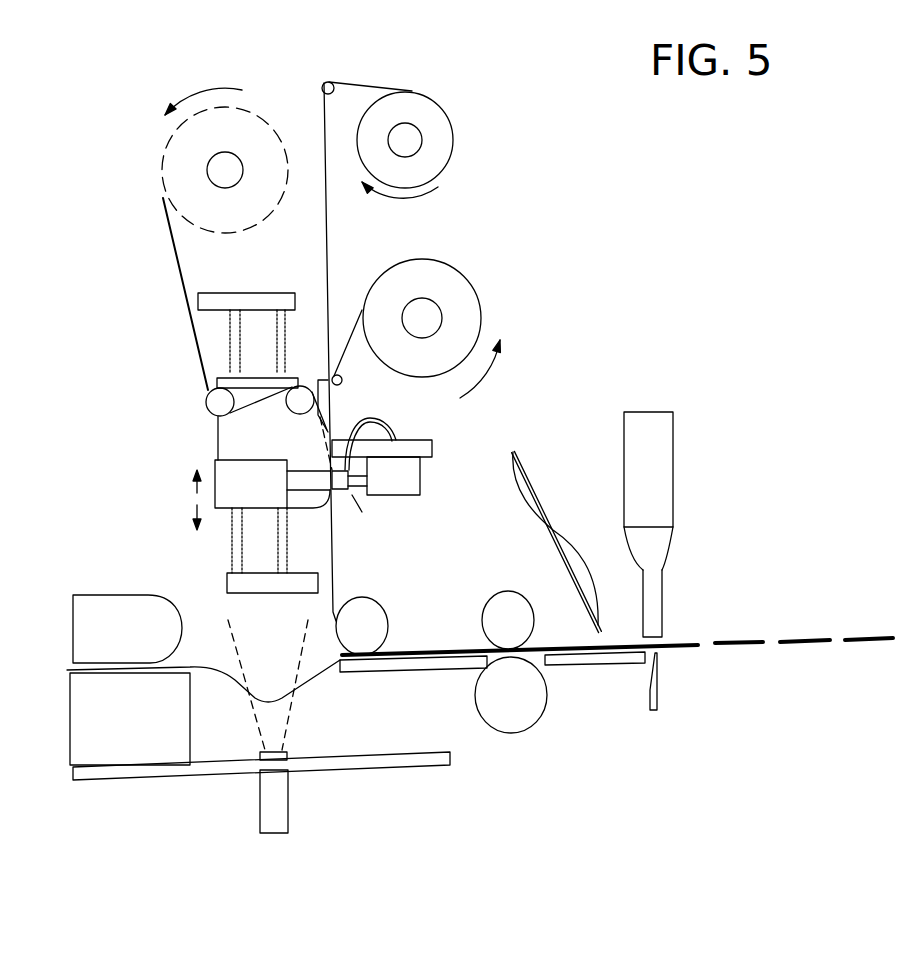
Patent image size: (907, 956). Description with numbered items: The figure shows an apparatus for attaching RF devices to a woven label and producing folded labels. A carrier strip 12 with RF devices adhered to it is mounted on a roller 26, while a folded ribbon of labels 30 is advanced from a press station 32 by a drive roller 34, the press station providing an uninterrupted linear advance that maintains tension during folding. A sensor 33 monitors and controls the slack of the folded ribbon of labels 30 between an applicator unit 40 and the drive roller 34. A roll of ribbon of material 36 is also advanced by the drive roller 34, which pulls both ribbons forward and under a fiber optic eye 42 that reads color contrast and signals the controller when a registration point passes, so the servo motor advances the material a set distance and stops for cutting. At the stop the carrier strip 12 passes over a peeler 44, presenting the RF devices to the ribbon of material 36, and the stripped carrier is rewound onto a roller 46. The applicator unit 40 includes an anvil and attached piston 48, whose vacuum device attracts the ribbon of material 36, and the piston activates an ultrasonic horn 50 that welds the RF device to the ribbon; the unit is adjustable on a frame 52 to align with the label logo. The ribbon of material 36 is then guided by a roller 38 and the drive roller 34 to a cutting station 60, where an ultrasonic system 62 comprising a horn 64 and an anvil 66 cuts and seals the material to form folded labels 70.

The carrier strip 12 is at (257, 112).
The roller 26 is at (182, 183).
The folded ribbon of labels 30 is at (312, 685).
The press station 32 is at (118, 595).
The sensor 33 is at (290, 813).
The drive roller 34 is at (510, 588).
The ribbon of material 36 is at (453, 260).
The roller 38 is at (388, 623).
The applicator unit 40 is at (188, 392).
The fiber optic eye 42 is at (550, 515).
The peeler 44 is at (330, 407).
The roller 46 is at (413, 92).
The anvil and attached piston 48 is at (352, 497).
The ultrasonic horn 50 is at (216, 470).
The frame 52 is at (242, 293).
The cutting station 60 is at (672, 630).
The ultrasonic system 62 is at (699, 508).
The horn 64 is at (673, 487).
The anvil 66 is at (657, 700).
The folded labels 70 is at (805, 640).